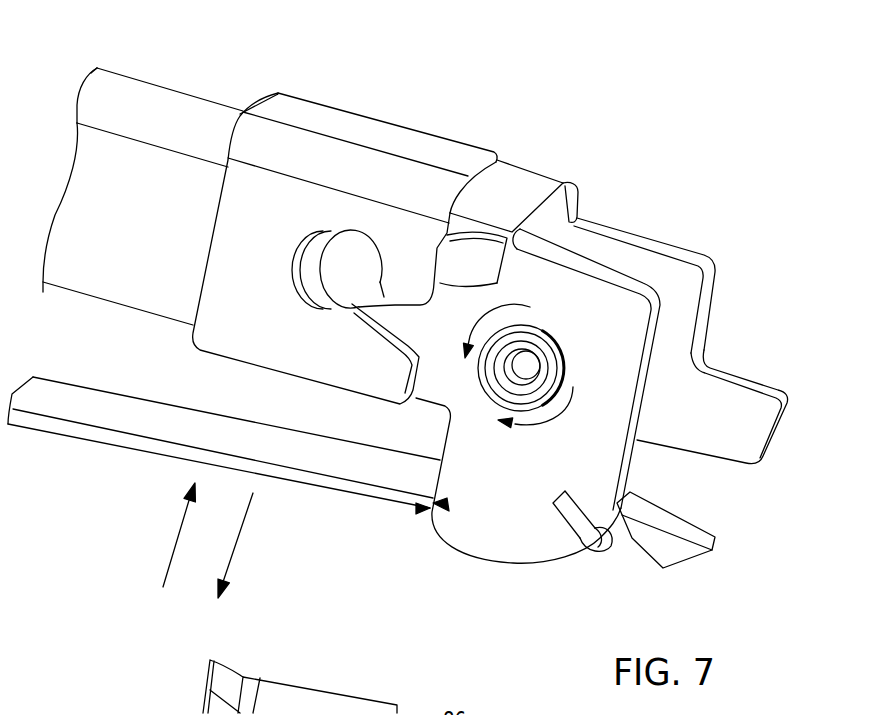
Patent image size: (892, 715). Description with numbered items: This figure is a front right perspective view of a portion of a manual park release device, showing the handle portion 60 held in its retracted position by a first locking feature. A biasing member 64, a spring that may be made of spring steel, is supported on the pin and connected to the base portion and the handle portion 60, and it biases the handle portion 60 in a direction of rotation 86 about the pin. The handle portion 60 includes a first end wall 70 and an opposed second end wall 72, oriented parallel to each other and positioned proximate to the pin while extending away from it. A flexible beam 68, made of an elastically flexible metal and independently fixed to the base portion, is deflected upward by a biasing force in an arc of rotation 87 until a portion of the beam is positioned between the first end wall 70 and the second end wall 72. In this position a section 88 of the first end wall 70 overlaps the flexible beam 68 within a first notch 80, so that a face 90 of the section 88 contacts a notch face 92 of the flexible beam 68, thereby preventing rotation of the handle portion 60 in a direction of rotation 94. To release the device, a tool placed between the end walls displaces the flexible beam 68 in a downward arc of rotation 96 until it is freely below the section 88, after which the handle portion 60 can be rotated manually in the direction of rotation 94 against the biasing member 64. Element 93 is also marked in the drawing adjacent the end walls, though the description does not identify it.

The handle portion 60 is at (180, 147).
The biasing member 64 is at (627, 533).
The flexible beam 68 is at (190, 430).
The first end wall 70 is at (601, 273).
The second end wall 72 is at (668, 253).
The first notch 80 is at (705, 527).
The direction of rotation 86 is at (470, 325).
The arc of rotation 87 is at (178, 543).
The section 88 is at (540, 537).
The face 90 is at (418, 508).
The notch face 92 is at (452, 512).
The tab 93 is at (737, 397).
The direction of rotation 94 is at (553, 410).
The downward arc of rotation 96 is at (240, 545).